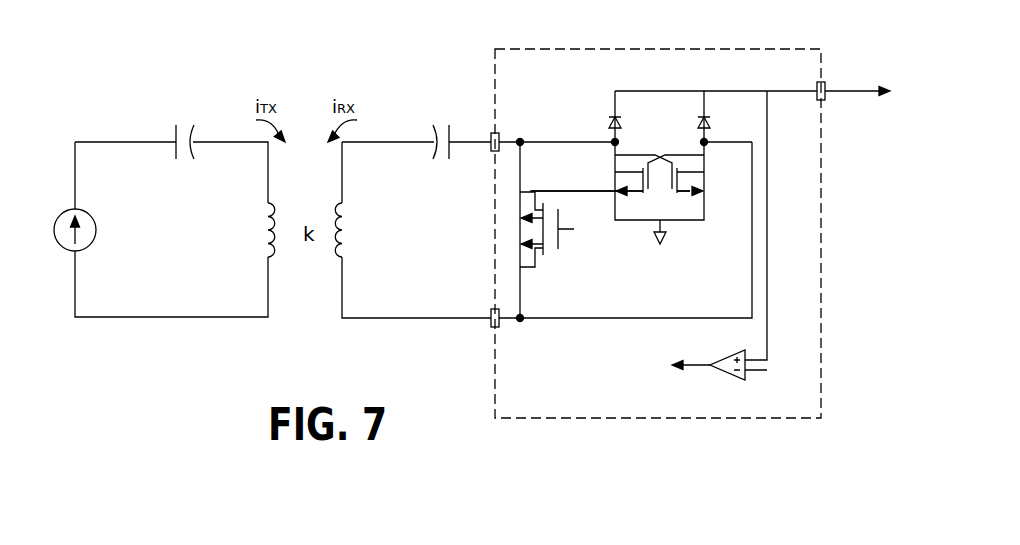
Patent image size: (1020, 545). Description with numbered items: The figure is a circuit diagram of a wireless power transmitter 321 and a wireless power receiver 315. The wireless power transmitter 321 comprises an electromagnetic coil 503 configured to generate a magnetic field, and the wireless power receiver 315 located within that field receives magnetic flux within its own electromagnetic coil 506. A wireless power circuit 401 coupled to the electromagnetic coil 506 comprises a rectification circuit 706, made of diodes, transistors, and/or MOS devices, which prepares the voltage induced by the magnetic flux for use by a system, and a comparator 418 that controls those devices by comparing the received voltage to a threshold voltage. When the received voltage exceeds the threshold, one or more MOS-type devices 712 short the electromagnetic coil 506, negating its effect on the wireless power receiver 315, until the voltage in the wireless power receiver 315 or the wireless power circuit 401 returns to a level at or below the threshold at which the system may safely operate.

The wireless power transmitter 321 is at (152, 100).
The wireless power receiver 315 is at (402, 100).
The electromagnetic coil 503 is at (268, 204).
The electromagnetic coil 506 is at (342, 258).
The wireless power circuit 401 is at (519, 48).
The MOS-type device 712 is at (553, 270).
The rectification circuit 706 is at (703, 238).
The comparator 418 is at (735, 380).